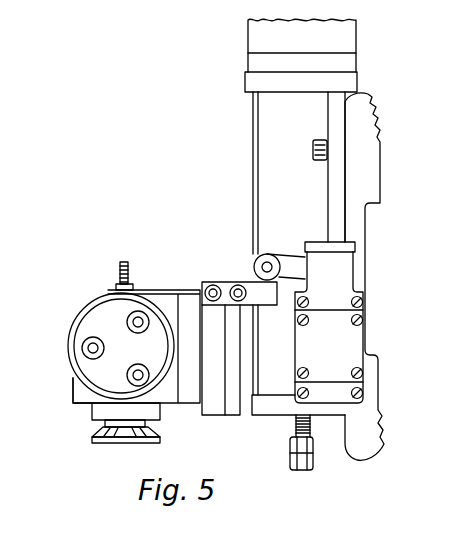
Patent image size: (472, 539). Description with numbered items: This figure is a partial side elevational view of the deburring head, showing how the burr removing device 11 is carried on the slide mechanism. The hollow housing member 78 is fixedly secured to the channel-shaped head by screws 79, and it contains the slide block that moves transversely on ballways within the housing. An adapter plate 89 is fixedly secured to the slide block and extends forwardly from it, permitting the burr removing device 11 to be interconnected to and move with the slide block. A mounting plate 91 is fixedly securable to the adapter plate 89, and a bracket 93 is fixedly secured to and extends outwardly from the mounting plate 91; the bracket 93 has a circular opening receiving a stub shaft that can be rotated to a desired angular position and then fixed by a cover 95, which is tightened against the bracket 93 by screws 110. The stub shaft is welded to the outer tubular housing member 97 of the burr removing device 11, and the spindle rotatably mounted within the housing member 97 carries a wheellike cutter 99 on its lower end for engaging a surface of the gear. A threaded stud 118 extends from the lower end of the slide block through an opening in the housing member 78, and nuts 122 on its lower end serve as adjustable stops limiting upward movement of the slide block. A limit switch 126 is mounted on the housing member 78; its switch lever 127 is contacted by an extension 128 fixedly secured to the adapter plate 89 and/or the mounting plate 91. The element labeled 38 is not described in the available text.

The burr removing device 11 is at (471, 7).
The support bracket 38 is at (384, 168).
The hollow housing member 78 is at (268, 157).
The screws 79 is at (315, 140).
The adapter plate 89 is at (236, 415).
The mounting plate 91 is at (213, 417).
The bracket 93 is at (70, 350).
The cover 95 is at (108, 312).
The outer tubular housing member 97 is at (80, 395).
The cutter 99 is at (100, 440).
The screws 110 is at (80, 342).
The threaded stud 118 is at (296, 432).
The nuts 122 is at (295, 468).
The limit switch 126 is at (343, 275).
The switch lever 127 is at (287, 266).
The extension 128 is at (255, 295).